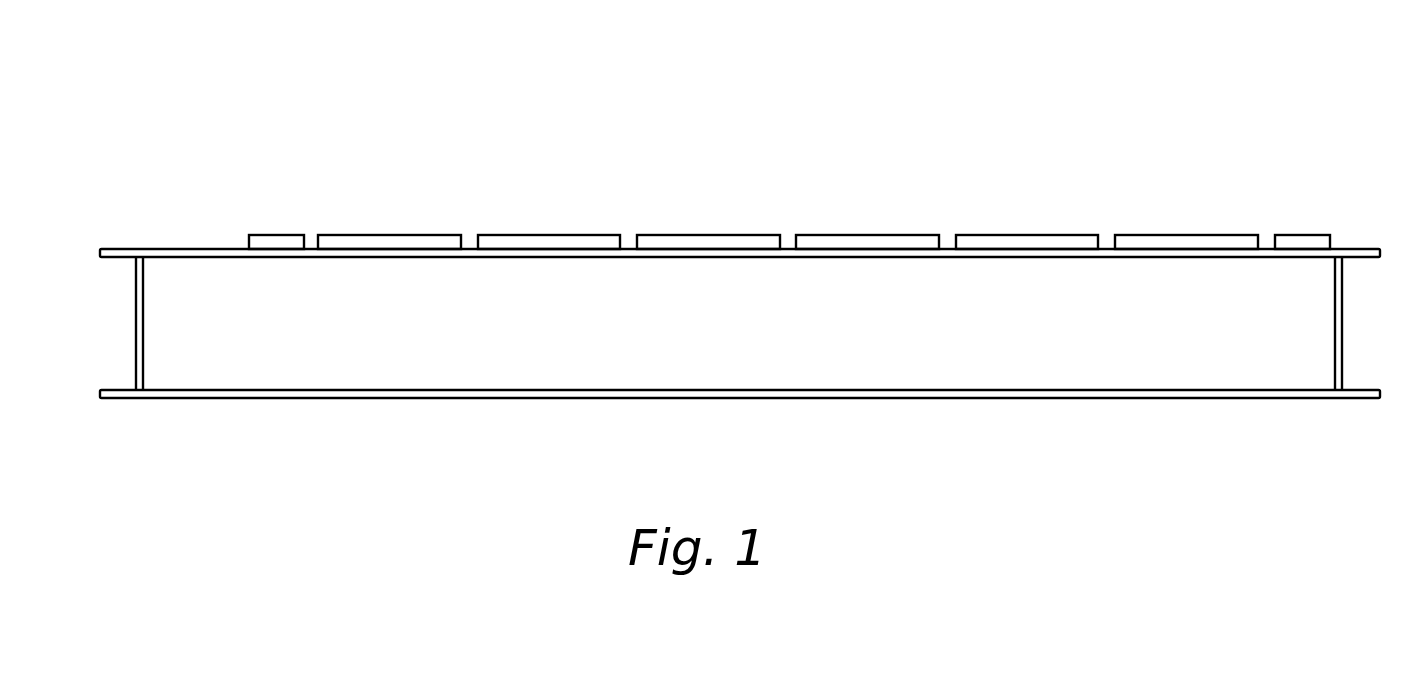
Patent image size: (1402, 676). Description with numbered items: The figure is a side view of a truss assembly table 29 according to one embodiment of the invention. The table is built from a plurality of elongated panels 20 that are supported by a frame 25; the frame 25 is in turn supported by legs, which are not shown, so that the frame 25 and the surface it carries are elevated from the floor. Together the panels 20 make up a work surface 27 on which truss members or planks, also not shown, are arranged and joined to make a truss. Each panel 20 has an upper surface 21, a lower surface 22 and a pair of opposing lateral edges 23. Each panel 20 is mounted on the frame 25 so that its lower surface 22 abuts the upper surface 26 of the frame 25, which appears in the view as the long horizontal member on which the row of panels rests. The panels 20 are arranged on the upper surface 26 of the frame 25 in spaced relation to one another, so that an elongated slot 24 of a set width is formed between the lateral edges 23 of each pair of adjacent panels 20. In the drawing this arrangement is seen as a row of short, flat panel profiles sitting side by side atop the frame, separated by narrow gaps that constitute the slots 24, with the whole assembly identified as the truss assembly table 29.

The elongated panel 20 is at (497, 240).
The upper surface 21 is at (533, 236).
The lower surface 22 is at (717, 252).
The lateral edge 23 is at (628, 246).
The elongated slot 24 is at (633, 242).
The frame 25 is at (173, 325).
The upper surface of frame 26 is at (192, 248).
The work surface 27 is at (1000, 234).
The truss assembly table 29 is at (1218, 130).